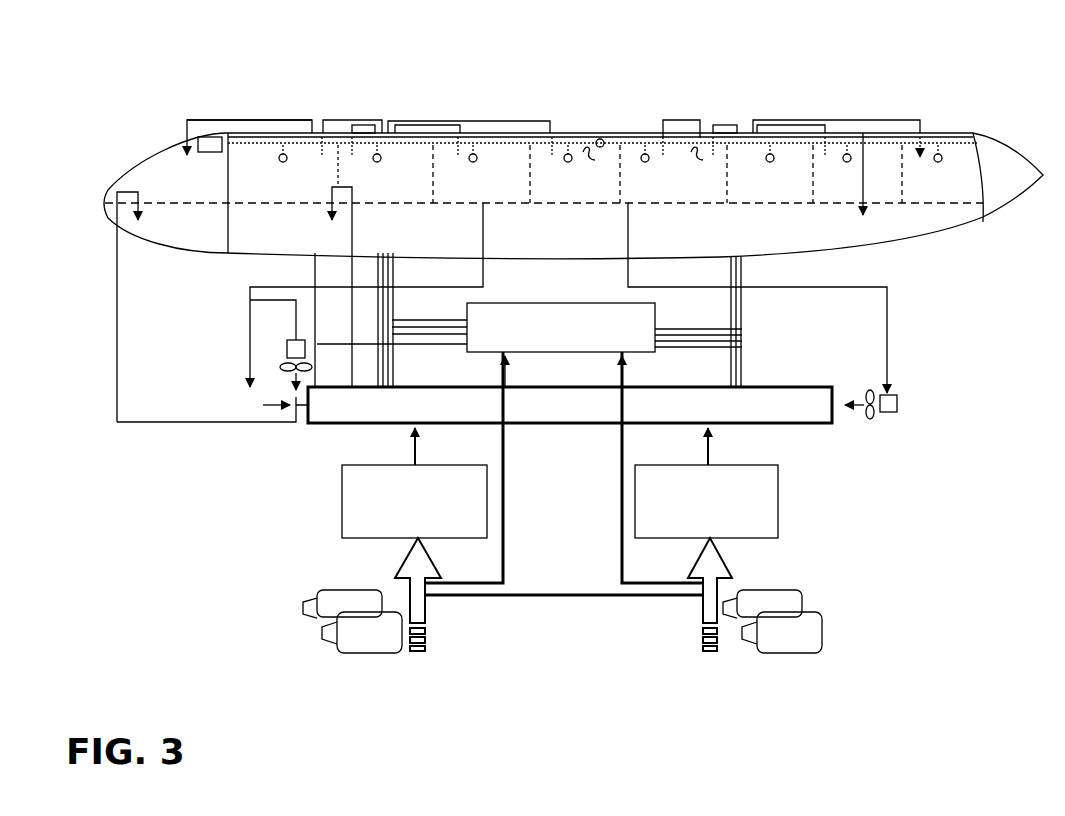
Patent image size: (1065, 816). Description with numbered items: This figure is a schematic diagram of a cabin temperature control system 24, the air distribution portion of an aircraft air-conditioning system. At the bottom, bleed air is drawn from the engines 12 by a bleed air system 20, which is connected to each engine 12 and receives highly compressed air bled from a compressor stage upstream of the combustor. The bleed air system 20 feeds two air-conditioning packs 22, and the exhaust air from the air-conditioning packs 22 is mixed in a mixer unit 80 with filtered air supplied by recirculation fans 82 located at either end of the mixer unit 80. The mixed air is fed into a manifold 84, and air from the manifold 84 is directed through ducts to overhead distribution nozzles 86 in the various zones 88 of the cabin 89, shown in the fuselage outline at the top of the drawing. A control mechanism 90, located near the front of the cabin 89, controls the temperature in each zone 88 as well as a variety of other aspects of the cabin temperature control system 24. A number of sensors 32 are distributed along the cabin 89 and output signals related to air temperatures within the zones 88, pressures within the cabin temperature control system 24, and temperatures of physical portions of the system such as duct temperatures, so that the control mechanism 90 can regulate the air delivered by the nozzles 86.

The engine 12 is at (355, 640).
The bleed air system 20 is at (668, 604).
The air-conditioning pack 22 is at (343, 505).
The cabin temperature control system 24 is at (196, 118).
The sensor 32 is at (376, 153).
The mixer unit 80 is at (813, 423).
The recirculation fan 82 is at (285, 349).
The manifold 84 is at (583, 303).
The nozzle 86 is at (550, 152).
The zone 88 is at (588, 147).
The cabin 89 is at (600, 138).
The control mechanism 90 is at (215, 143).